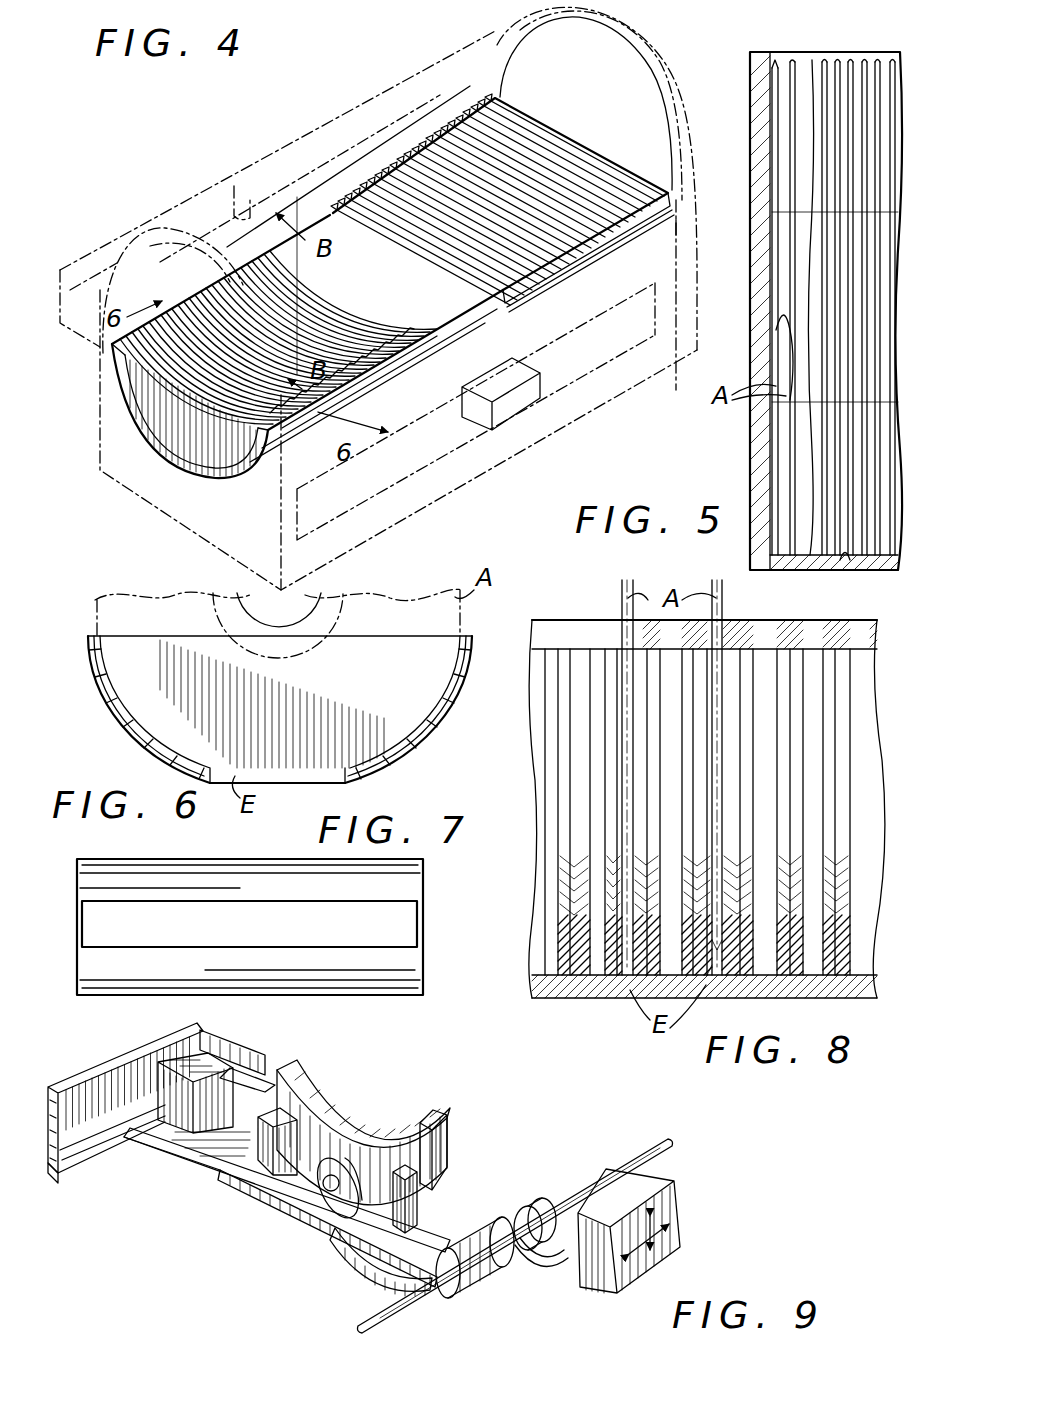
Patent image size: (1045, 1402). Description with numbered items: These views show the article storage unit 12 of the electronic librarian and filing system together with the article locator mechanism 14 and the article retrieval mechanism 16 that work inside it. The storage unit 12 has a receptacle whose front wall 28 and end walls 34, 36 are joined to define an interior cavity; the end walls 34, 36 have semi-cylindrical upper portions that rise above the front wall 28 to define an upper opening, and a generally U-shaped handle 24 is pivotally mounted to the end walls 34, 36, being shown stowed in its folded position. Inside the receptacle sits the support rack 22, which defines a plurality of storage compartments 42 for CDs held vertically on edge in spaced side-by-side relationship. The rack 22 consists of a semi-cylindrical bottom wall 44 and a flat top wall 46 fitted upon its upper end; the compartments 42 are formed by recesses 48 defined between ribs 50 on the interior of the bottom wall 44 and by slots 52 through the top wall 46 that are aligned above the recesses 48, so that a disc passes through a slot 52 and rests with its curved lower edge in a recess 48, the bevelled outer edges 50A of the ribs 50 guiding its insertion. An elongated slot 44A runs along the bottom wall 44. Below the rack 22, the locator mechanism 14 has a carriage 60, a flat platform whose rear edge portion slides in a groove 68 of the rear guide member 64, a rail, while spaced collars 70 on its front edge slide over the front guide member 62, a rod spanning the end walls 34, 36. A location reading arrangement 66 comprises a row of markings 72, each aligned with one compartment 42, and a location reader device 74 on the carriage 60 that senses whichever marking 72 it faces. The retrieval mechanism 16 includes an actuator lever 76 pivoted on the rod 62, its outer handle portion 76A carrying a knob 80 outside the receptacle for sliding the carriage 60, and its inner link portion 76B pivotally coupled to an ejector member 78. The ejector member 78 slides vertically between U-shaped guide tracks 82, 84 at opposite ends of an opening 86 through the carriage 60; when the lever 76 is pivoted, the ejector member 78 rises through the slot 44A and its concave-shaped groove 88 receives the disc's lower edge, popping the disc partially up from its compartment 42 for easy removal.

In FIG. 4, the article storage unit 12 is at (679, 95).
In FIG. 9, the article locator mechanism 14 is at (152, 1150).
In FIG. 9, the article retrieval mechanism 16 is at (290, 1276).
In FIG. 4, the support rack 22 is at (190, 440).
In FIG. 5, the support rack 22 is at (782, 52).
In FIG. 6, the support rack 22 is at (456, 668).
In FIG. 7, the support rack 22 is at (362, 997).
In FIG. 8, the support rack 22 is at (880, 716).
In FIG. 4, the handle 24 is at (228, 213).
In FIG. 4, the front wall 28 is at (684, 245).
In FIG. 4, the end wall 34 is at (622, 119).
In FIG. 4, the end wall 36 is at (172, 277).
In FIG. 4, the storage compartments 42 is at (392, 196).
In FIG. 5, the storage compartments 42 is at (826, 140).
In FIG. 8, the storage compartments 42 is at (588, 655).
In FIG. 4, the bottom wall 44 is at (253, 457).
In FIG. 6, the bottom wall 44 is at (136, 733).
In FIG. 7, the bottom wall 44 is at (420, 884).
In FIG. 8, the bottom wall 44 is at (540, 976).
In FIG. 4, the elongated slot 44A is at (450, 312).
In FIG. 5, the elongated slot 44A is at (772, 330).
In FIG. 6, the elongated slot 44A is at (350, 784).
In FIG. 7, the elongated slot 44A is at (272, 946).
In FIG. 4, the top wall 46 is at (660, 196).
In FIG. 5, the top wall 46 is at (815, 62).
In FIG. 8, the top wall 46 is at (551, 633).
In FIG. 4, the recesses 48 is at (190, 360).
In FIG. 5, the recesses 48 is at (845, 560).
In FIG. 8, the recesses 48 is at (566, 845).
In FIG. 4, the ribs 50 is at (355, 362).
In FIG. 5, the ribs 50 is at (785, 562).
In FIG. 6, the ribs 50 is at (203, 765).
In FIG. 8, the ribs 50 is at (583, 980).
In FIG. 8, the bevelled outer edges 50A is at (760, 970).
In FIG. 4, the slots 52 is at (532, 162).
In FIG. 5, the slots 52 is at (880, 62).
In FIG. 8, the slots 52 is at (821, 630).
In FIG. 9, the carriage 60 is at (224, 1175).
In FIG. 9, the front guide member 62 is at (410, 1308).
In FIG. 9, the rear guide member 64 is at (56, 1172).
In FIG. 9, the location reading arrangement 66 is at (243, 1052).
In FIG. 9, the groove 68 is at (100, 1143).
In FIG. 9, the collars 70 is at (500, 1290).
In FIG. 9, the markings 72 is at (126, 1080).
In FIG. 9, the location reader device 74 is at (124, 1150).
In FIG. 9, the actuator lever 76 is at (521, 1212).
In FIG. 9, the outer handle portion 76A is at (560, 1262).
In FIG. 9, the inner link portion 76B is at (375, 1273).
In FIG. 9, the ejector member 78 is at (305, 1185).
In FIG. 4, the knob 80 is at (522, 405).
In FIG. 9, the knob 80 is at (683, 1215).
In FIG. 9, the guide track 82 is at (470, 1192).
In FIG. 9, the guide track 84 is at (258, 1140).
In FIG. 9, the opening 86 is at (254, 1180).
In FIG. 9, the concave-shaped groove 88 is at (372, 1128).